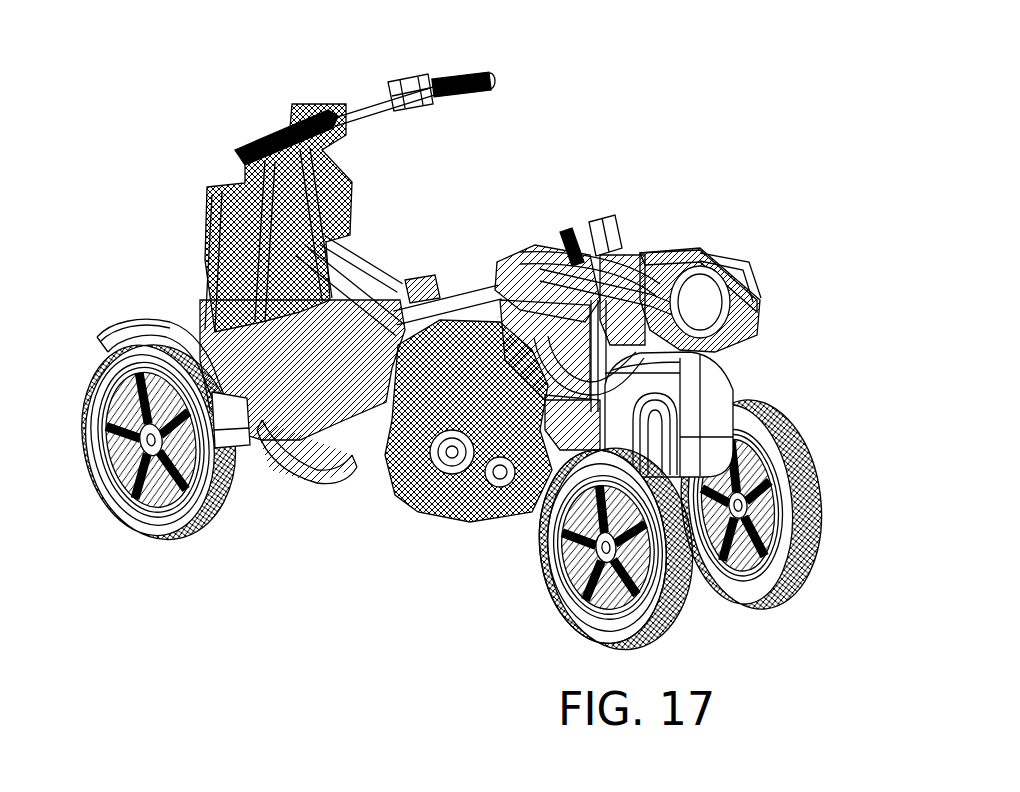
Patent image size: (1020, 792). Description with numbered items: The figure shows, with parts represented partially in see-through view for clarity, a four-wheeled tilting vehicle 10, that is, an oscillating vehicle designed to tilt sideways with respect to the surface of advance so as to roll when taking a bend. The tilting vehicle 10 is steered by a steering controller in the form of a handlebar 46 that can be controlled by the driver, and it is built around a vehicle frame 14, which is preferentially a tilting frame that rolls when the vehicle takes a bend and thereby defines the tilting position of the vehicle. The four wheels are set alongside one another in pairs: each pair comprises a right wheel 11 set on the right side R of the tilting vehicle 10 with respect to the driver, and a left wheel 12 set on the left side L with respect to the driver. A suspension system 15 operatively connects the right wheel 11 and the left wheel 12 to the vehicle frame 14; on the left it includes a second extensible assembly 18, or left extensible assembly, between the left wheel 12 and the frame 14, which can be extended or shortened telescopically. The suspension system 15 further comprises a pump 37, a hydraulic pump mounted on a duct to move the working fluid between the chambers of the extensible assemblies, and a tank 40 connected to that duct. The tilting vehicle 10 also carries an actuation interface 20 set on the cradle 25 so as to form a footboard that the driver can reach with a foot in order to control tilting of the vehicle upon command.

The tilting vehicle 10 is at (180, 245).
The right wheel 11 is at (350, 480).
The left wheel 12 is at (127, 520).
The vehicle frame 14 is at (345, 275).
The suspension system 15 is at (597, 213).
The second extensible assembly 18 is at (487, 513).
The actuation interface 20 is at (317, 480).
The cradle 25 is at (423, 287).
The pump 37 is at (537, 280).
The tank 40 is at (600, 230).
The handlebar 46 is at (458, 78).
The left side L is at (260, 493).
The right side R is at (737, 272).